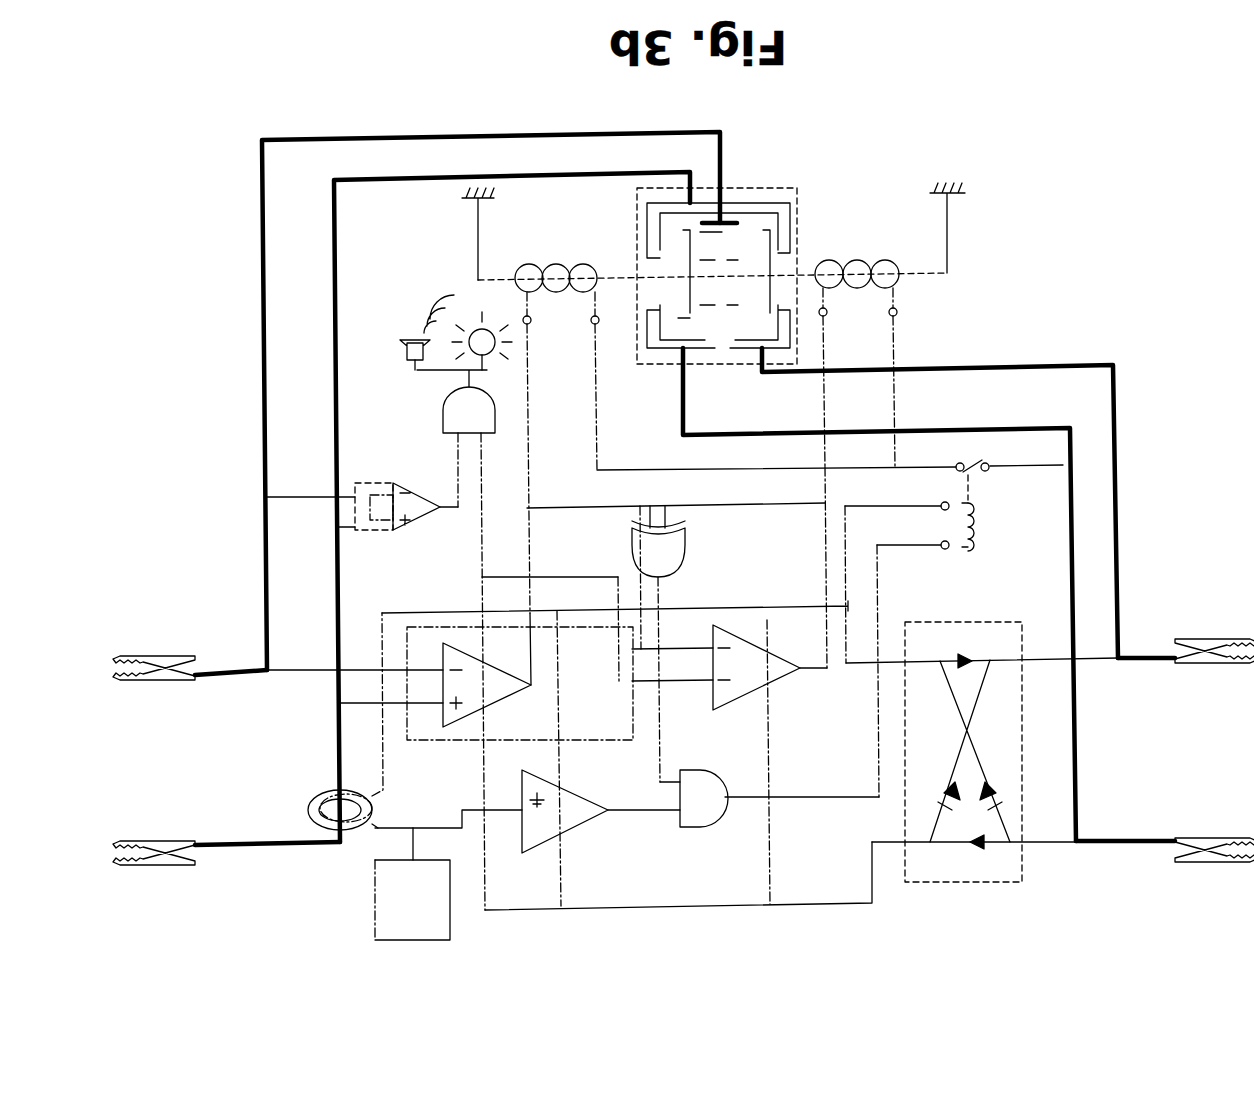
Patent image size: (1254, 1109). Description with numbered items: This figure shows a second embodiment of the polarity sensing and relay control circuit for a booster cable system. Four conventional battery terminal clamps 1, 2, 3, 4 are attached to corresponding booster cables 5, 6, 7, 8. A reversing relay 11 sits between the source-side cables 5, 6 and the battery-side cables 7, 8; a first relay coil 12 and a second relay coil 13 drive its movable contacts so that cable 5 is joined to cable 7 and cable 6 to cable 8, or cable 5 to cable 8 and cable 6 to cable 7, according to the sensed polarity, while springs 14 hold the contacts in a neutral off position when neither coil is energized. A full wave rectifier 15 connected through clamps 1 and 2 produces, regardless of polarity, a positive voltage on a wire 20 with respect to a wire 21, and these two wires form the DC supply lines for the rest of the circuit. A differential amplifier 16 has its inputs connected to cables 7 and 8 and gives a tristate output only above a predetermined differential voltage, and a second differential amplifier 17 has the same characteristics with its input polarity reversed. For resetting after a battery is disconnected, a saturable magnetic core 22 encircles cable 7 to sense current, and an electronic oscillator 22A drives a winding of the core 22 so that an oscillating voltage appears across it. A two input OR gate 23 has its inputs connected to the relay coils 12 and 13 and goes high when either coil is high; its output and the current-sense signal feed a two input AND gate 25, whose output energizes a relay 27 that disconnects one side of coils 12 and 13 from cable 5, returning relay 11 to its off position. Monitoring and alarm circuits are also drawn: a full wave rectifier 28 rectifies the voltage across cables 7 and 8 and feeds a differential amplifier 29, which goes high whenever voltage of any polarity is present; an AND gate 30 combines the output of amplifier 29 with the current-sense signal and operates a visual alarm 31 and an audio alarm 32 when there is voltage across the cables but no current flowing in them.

The battery terminal clamp 1 is at (1250, 862).
The battery terminal clamp 2 is at (1245, 667).
The battery terminal clamp 3 is at (152, 860).
The battery terminal clamp 4 is at (140, 683).
The booster cable 5 is at (1127, 845).
The booster cable 6 is at (1152, 662).
The booster cable 7 is at (312, 850).
The booster cable 8 is at (228, 685).
The reversing relay 11 is at (797, 188).
The first relay coil 12 is at (868, 257).
The second relay coil 13 is at (560, 263).
The spring 14 is at (478, 270).
The full wave rectifier 15 is at (942, 870).
The differential amplifier 16 is at (475, 712).
The differential amplifier 17 is at (775, 670).
The wire 20 is at (660, 912).
The wire 21 is at (748, 588).
The saturable magnetic core 22 is at (312, 800).
The electronic oscillator 22A is at (400, 920).
The two input OR gate 23 is at (683, 545).
The two input AND gate 25 is at (705, 830).
The relay 27 is at (975, 535).
The full wave rectifier 28 is at (370, 532).
The differential amplifier 29 is at (410, 518).
The AND gate 30 is at (447, 428).
The visual alarm 31 is at (485, 354).
The audio alarm 32 is at (408, 362).